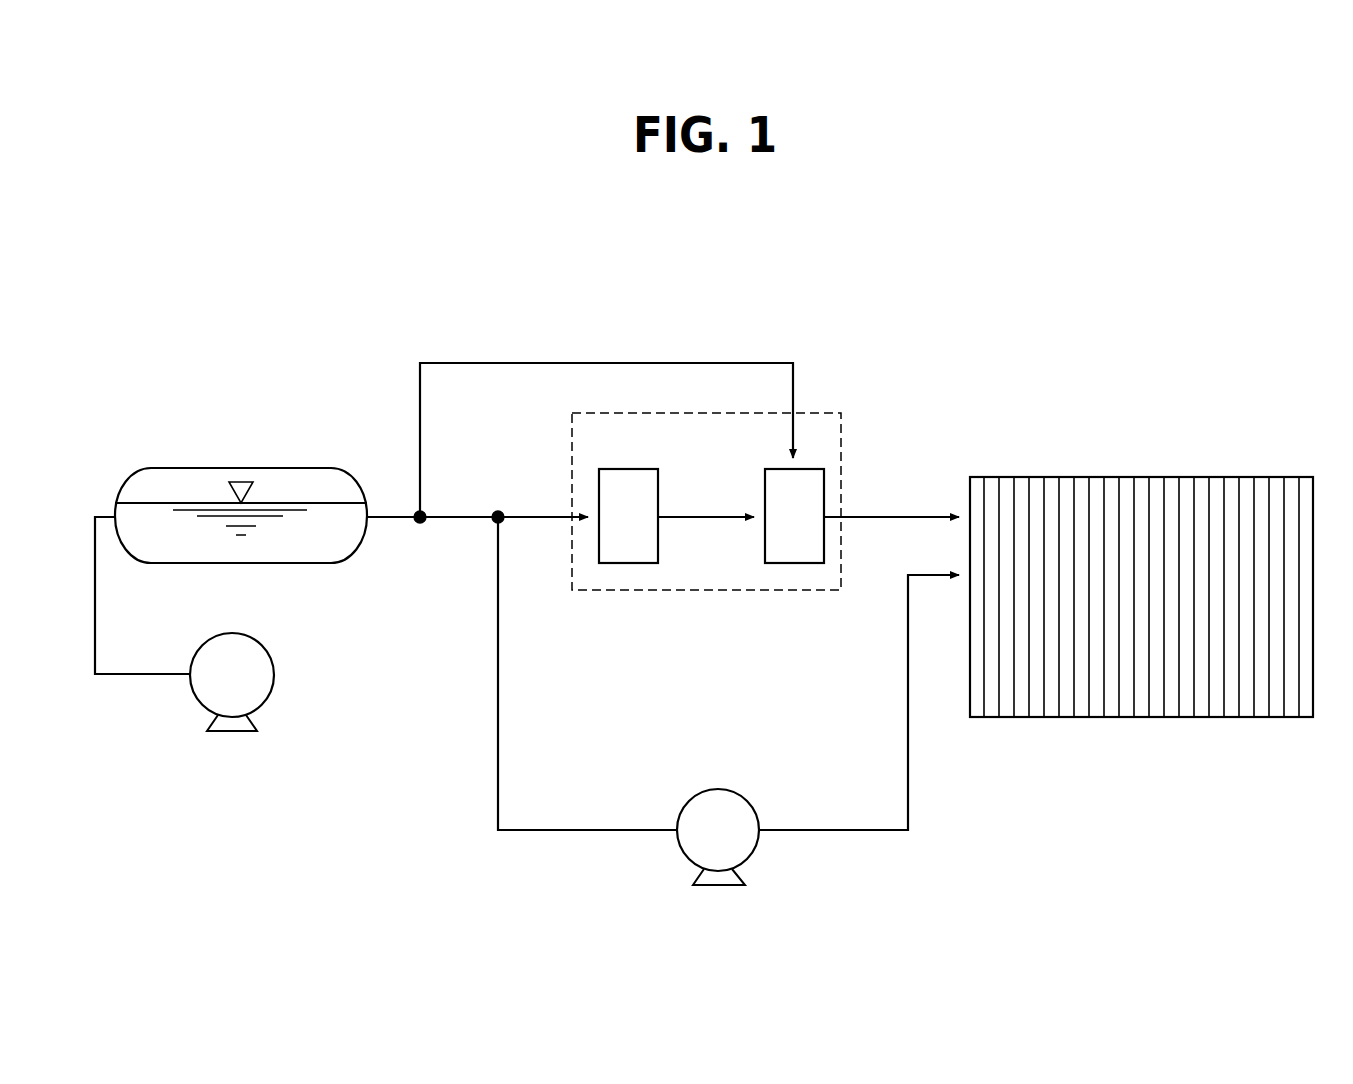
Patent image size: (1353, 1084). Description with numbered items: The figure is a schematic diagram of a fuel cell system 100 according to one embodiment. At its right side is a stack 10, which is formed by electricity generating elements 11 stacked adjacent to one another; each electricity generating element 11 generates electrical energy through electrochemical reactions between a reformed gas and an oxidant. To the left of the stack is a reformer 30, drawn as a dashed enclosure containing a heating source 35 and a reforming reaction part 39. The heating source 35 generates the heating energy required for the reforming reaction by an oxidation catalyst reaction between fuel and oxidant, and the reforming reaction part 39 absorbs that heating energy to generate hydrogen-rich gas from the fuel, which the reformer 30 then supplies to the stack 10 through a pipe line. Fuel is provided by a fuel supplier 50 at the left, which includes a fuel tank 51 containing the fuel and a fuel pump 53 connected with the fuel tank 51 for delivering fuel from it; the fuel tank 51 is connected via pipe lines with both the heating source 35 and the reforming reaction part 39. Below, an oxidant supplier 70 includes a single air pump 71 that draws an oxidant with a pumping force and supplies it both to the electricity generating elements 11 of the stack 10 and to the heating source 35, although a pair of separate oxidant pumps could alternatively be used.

The fuel cell system 100 is at (668, 273).
The stack 10 is at (1141, 597).
The electricity generating element 11 is at (1022, 719).
The reformer 30 is at (717, 463).
The heating source 35 is at (634, 469).
The reforming reaction part 39 is at (805, 469).
The fuel supplier 50 is at (230, 641).
The fuel tank 51 is at (180, 565).
The fuel pump 53 is at (242, 633).
The oxidant supplier 70 is at (728, 714).
The air pump 71 is at (730, 789).